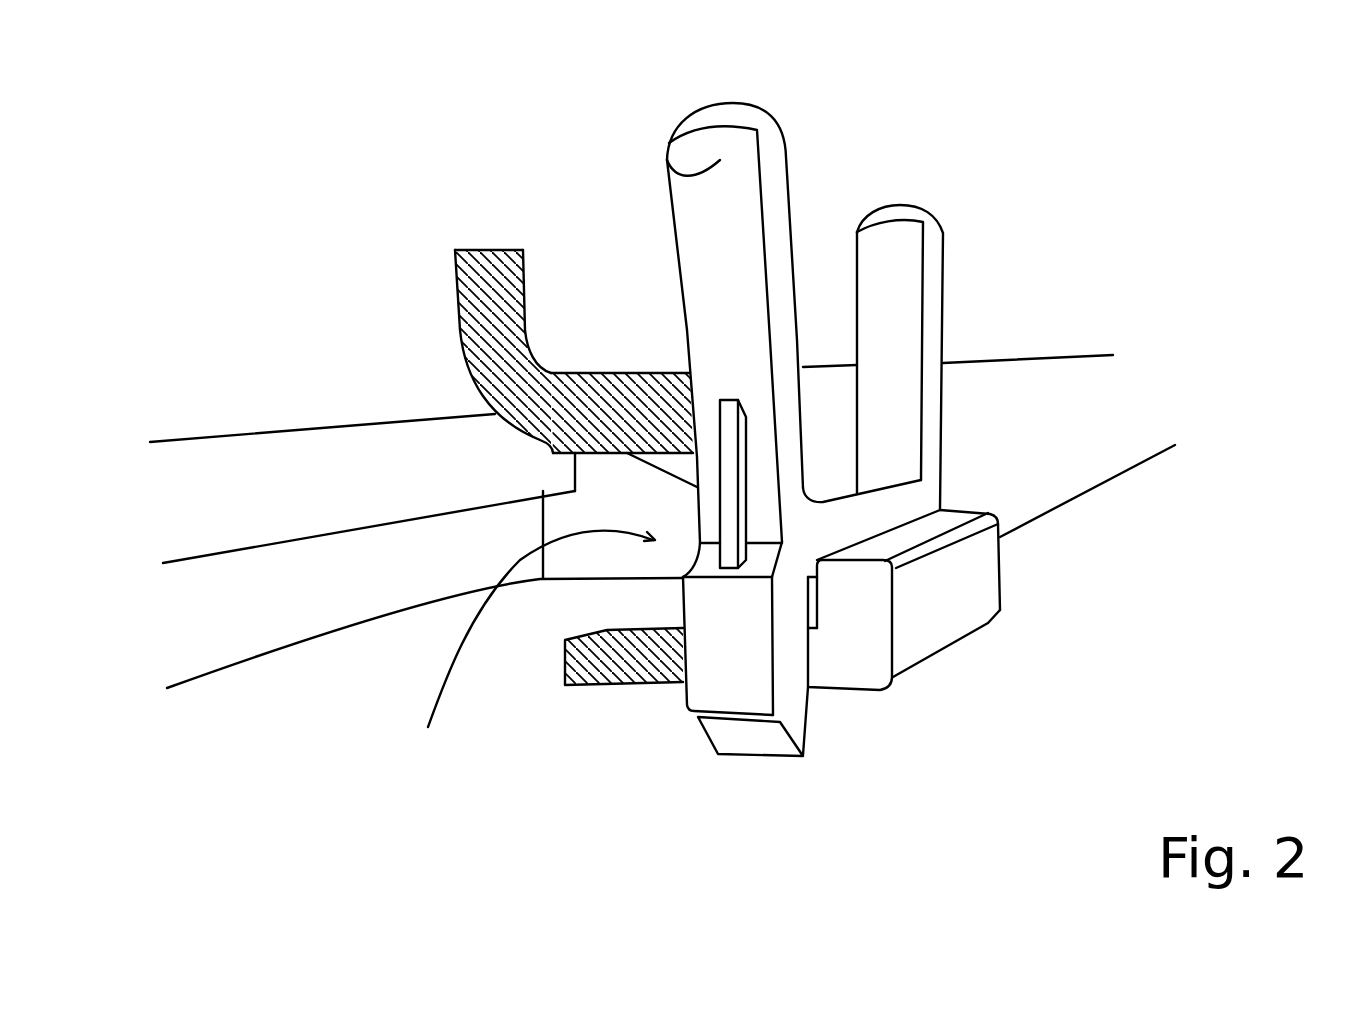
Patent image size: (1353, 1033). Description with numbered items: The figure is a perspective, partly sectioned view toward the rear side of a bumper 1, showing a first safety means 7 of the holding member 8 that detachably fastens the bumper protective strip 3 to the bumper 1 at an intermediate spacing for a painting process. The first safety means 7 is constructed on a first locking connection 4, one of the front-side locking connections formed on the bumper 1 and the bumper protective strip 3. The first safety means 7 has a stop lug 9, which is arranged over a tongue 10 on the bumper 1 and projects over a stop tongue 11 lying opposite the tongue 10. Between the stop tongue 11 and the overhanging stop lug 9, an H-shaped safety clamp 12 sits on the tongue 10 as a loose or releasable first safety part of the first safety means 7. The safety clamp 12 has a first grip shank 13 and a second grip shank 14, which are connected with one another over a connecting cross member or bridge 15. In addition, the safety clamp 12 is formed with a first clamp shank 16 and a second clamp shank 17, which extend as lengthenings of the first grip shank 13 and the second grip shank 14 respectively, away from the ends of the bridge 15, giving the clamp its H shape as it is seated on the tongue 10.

The bumper 1 is at (493, 293).
The bumper protective strip 3 is at (265, 620).
The first locking connection 4 is at (533, 658).
The first safety means 7 is at (781, 777).
The holding member 8 is at (1030, 553).
The stop lug 9 is at (973, 595).
The tongue 10 is at (833, 660).
The stop tongue 11 is at (613, 395).
The safety clamp 12 is at (1010, 270).
The first grip shank 13 is at (669, 178).
The second grip shank 14 is at (937, 260).
The bridge 15 is at (893, 507).
The first clamp shank 16 is at (725, 655).
The second clamp shank 17 is at (960, 660).